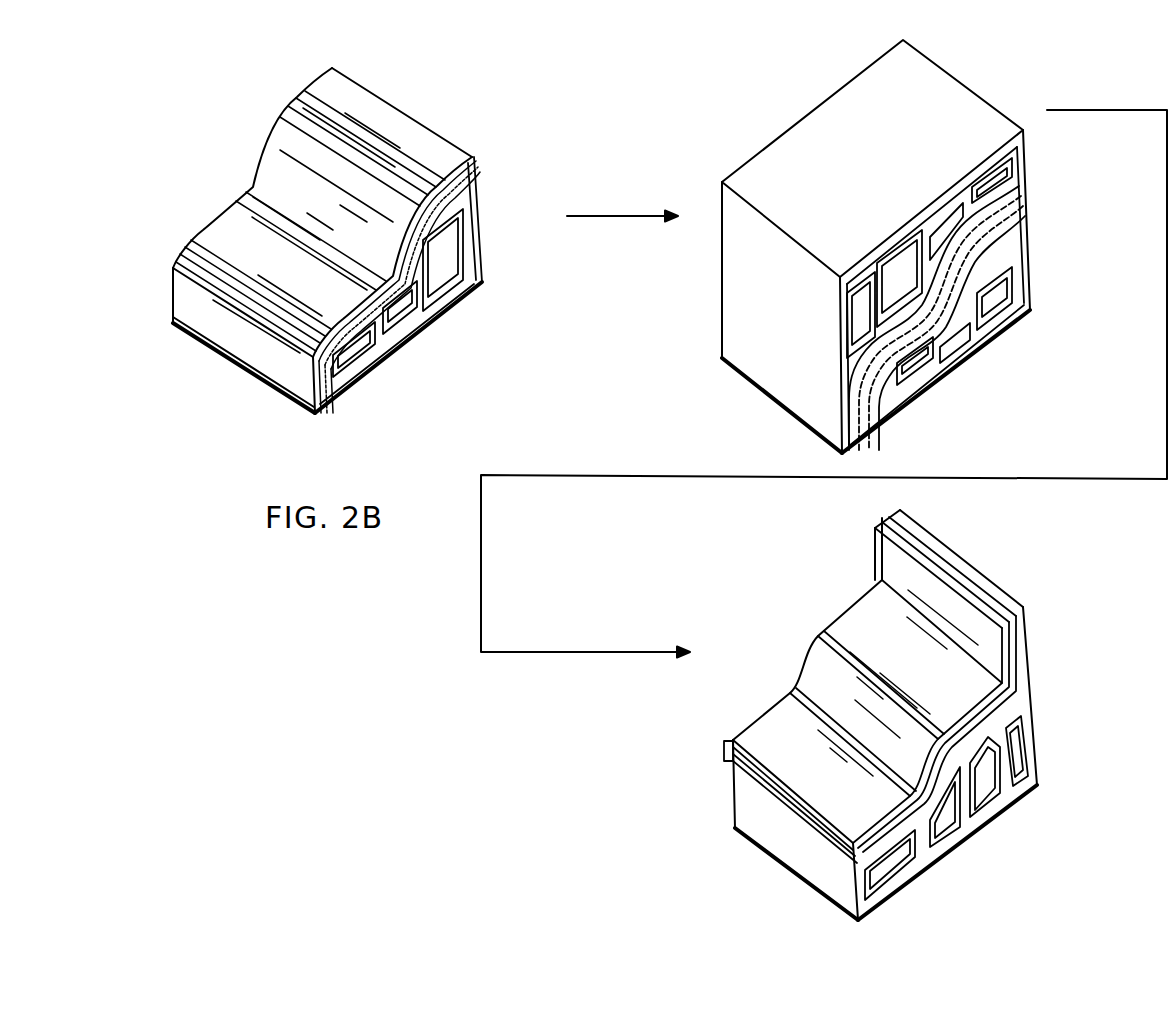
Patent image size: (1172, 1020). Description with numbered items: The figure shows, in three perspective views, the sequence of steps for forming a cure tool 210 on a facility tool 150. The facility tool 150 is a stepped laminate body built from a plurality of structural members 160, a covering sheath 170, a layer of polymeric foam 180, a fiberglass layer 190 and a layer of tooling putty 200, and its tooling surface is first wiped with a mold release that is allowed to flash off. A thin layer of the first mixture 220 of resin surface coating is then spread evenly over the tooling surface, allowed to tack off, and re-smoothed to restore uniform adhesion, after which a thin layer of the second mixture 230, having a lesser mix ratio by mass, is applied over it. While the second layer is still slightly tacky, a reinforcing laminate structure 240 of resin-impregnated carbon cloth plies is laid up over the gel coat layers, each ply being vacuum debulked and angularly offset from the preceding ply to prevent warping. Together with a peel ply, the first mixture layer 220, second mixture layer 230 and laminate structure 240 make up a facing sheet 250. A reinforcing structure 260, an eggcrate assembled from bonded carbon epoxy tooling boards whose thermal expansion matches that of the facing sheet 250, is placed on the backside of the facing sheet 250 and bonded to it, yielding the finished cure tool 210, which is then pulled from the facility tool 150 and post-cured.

The facility tool 150 is at (437, 121).
The structural members 160 is at (455, 287).
The covering sheath 170 is at (480, 176).
The layer of polymeric foam 180 is at (477, 171).
The fiberglass layer 190 is at (470, 160).
The layer of tooling putty 200 is at (280, 370).
The cure tool 210 is at (958, 80).
The layer of the first mixture 220 is at (1018, 200).
The layer of the second mixture 230 is at (1012, 186).
The laminate structure 240 is at (845, 441).
The facing sheet 250 is at (724, 752).
The reinforcing structure 260 is at (1010, 708).